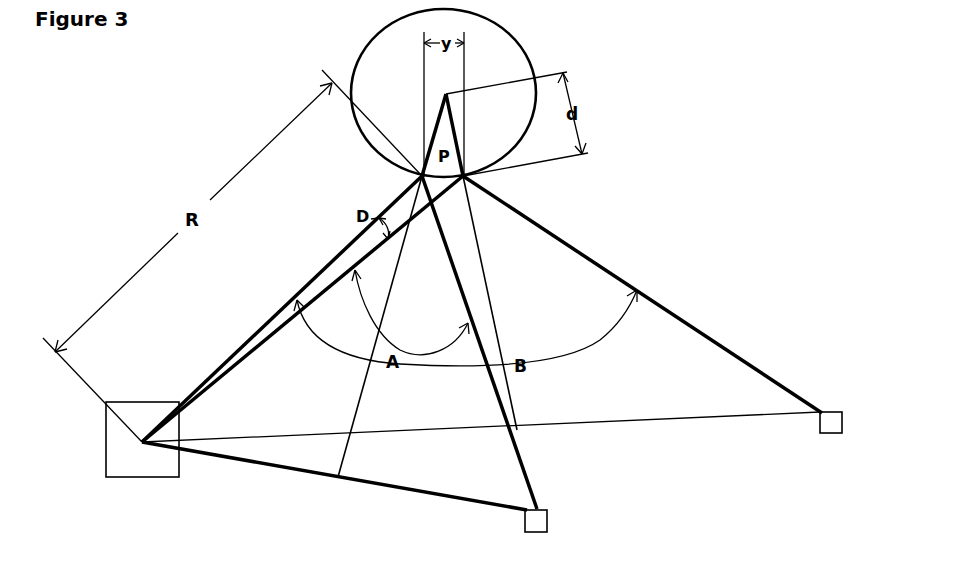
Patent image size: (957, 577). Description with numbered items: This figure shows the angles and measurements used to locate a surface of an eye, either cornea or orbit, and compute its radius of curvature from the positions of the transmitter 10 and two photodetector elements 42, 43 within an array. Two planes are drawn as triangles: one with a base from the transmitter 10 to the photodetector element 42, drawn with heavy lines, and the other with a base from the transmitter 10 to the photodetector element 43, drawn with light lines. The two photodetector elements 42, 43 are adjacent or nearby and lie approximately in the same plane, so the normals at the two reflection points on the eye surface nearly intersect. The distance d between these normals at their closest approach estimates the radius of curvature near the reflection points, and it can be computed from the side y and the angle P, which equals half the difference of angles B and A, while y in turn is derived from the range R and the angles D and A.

The transmitter 10 is at (106, 436).
The photodetector element 42 is at (547, 523).
The photodetector element 43 is at (842, 425).